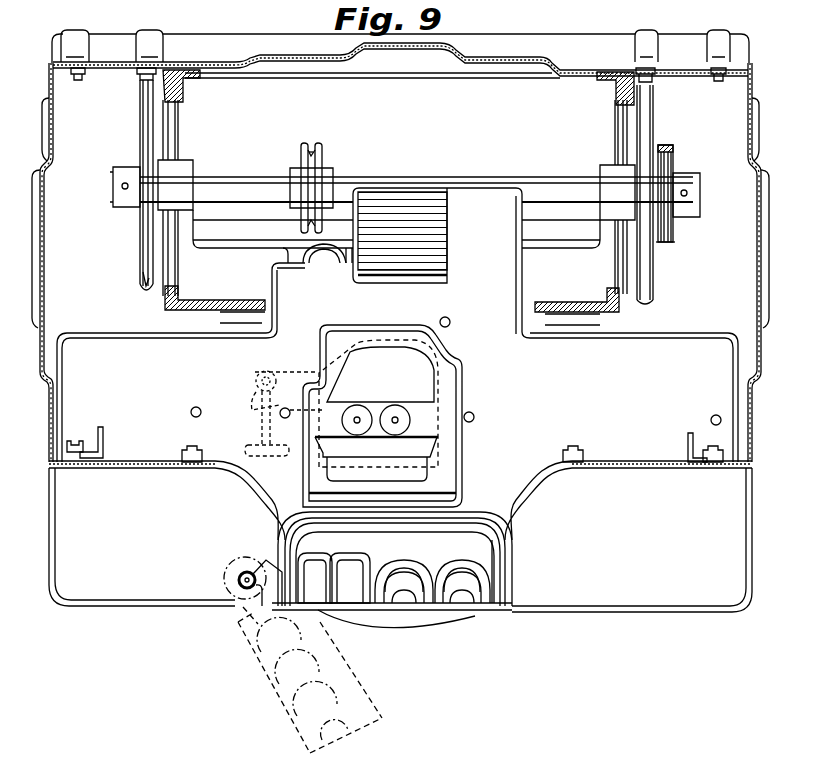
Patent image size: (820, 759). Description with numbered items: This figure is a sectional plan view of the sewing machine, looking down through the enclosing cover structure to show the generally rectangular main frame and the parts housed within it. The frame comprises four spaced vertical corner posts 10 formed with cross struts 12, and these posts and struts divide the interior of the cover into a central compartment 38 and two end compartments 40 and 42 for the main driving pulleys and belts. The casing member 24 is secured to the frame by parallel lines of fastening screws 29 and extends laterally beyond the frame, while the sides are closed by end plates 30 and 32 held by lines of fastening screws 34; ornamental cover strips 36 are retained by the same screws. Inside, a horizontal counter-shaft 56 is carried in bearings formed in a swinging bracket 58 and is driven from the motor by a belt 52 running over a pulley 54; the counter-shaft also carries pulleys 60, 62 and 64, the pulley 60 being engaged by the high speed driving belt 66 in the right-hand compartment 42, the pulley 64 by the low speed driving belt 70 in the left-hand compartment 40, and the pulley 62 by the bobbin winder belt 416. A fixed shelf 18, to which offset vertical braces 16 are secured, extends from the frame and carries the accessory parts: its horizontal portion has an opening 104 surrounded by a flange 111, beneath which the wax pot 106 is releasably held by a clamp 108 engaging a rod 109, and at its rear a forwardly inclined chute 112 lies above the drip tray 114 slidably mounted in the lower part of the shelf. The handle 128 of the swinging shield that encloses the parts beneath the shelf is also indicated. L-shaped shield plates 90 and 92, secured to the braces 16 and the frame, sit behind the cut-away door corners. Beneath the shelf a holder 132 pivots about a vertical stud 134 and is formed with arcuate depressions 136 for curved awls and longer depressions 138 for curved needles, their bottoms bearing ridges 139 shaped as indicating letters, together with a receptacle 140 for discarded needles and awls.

The vertical corner posts 10 is at (180, 83).
The cross struts 12 is at (178, 132).
The offset vertical braces 16 is at (103, 438).
The fixed shelf 18 is at (143, 593).
The casing member 24 is at (272, 58).
The fastening screws 29 is at (146, 82).
The end plate 30 is at (50, 412).
The end plate 32 is at (749, 418).
The fastening screws 34 is at (77, 84).
The ornamental cover strips 36 is at (143, 34).
The central compartment 38 is at (441, 223).
The end compartment 40 is at (181, 290).
The end compartment 42 is at (634, 321).
The belt 52 is at (647, 305).
The pulley 54 is at (653, 276).
The counter-shaft 56 is at (237, 186).
The swinging bracket 58 is at (540, 232).
The pulley 60 is at (673, 234).
The pulley 62 is at (305, 148).
The pulley 64 is at (140, 142).
The high speed driving belt 66 is at (665, 245).
The low speed driving belt 70 is at (146, 288).
The L-shaped shield plate 90 is at (143, 466).
The L-shaped shield plate 92 is at (640, 472).
The opening 104 is at (320, 334).
The wax pot 106 is at (323, 360).
The clamp 108 is at (256, 372).
The rod 109 is at (251, 398).
The flange 111 is at (463, 368).
The chute 112 is at (395, 208).
The drip tray 114 is at (333, 250).
The handle 128 is at (430, 622).
The holder 132 is at (378, 706).
The vertical stud 134 is at (240, 580).
The arcuate depressions 136 is at (353, 563).
The arcuate depressions 138 is at (420, 570).
The ridges 139 is at (492, 572).
The receptacle 140 is at (482, 548).
The belt 416 is at (312, 154).